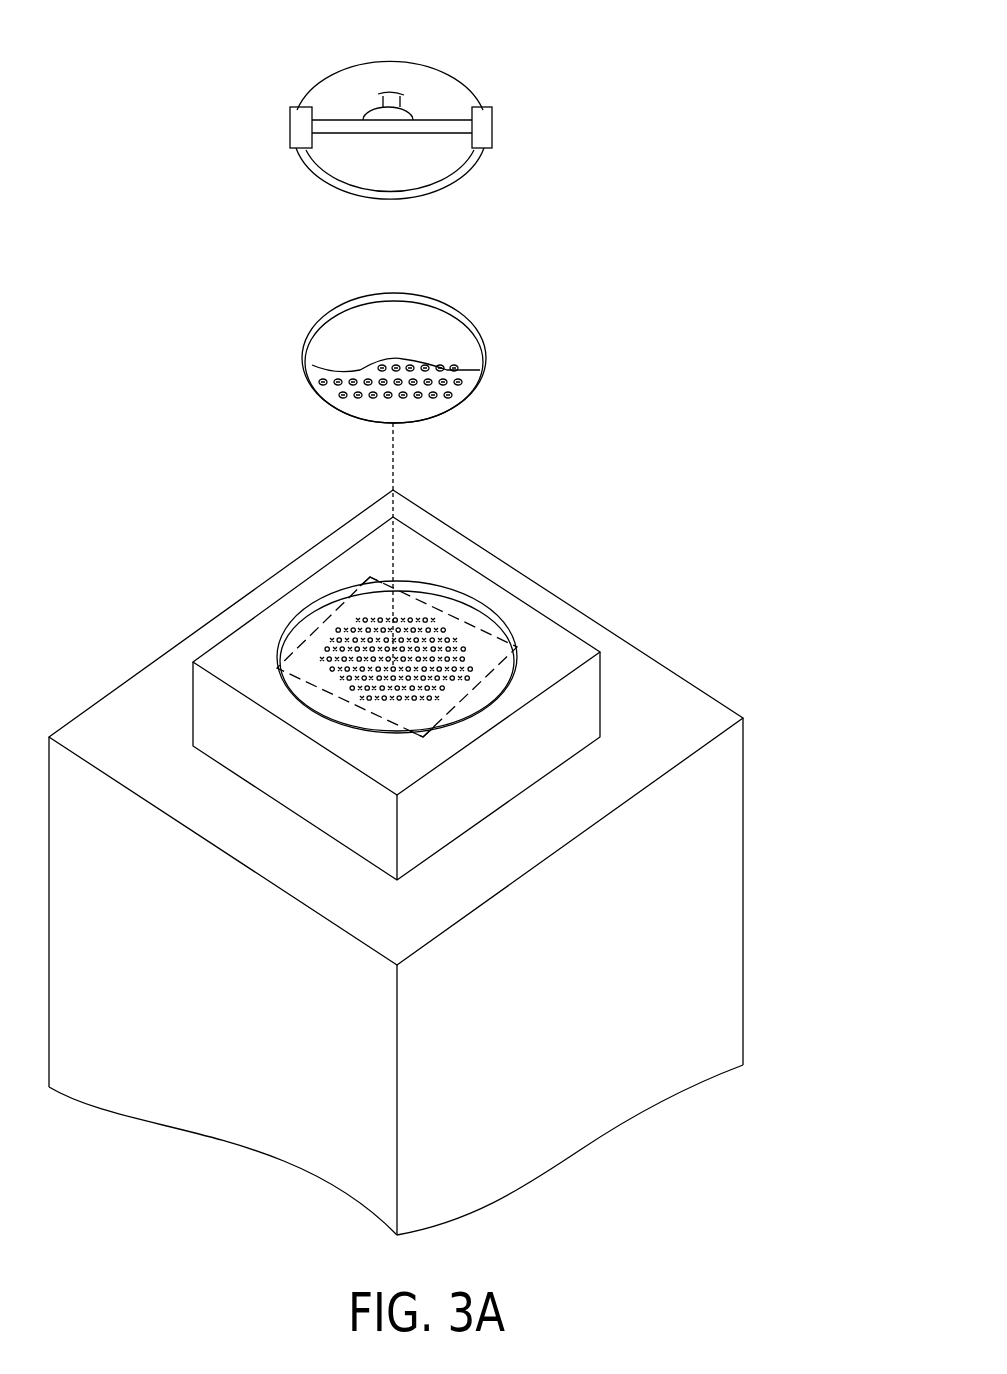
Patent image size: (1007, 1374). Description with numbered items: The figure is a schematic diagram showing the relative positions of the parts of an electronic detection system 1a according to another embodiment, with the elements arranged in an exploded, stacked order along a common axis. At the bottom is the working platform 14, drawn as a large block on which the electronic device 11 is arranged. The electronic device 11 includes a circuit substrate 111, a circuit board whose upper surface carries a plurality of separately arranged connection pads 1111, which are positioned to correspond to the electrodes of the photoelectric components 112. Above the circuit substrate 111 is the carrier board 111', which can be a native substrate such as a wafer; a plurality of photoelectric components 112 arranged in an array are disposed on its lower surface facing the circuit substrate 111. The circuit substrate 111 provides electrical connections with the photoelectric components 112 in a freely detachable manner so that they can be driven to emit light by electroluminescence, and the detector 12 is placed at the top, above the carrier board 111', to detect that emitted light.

The electronic detection system 1a is at (142, 44).
The detector 12 is at (447, 73).
The carrier board 111' is at (417, 362).
The photoelectric components 112 is at (332, 398).
The electronic device 11 is at (411, 612).
The circuit substrate 111 is at (416, 612).
The connection pads 1111 is at (460, 647).
The working platform 14 is at (715, 820).